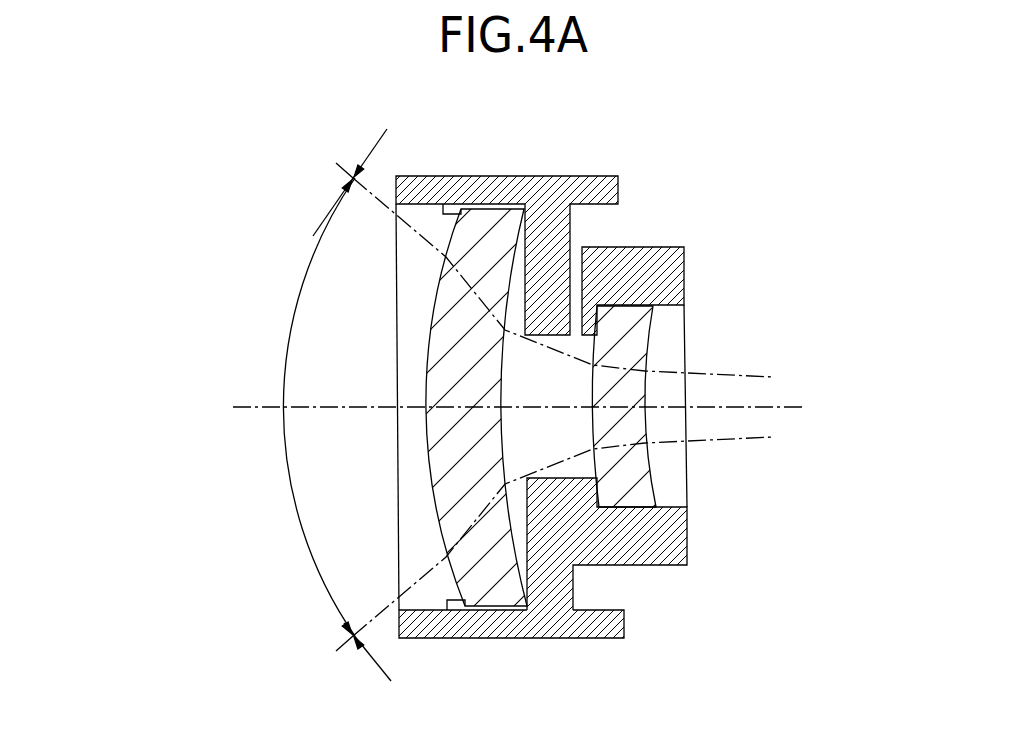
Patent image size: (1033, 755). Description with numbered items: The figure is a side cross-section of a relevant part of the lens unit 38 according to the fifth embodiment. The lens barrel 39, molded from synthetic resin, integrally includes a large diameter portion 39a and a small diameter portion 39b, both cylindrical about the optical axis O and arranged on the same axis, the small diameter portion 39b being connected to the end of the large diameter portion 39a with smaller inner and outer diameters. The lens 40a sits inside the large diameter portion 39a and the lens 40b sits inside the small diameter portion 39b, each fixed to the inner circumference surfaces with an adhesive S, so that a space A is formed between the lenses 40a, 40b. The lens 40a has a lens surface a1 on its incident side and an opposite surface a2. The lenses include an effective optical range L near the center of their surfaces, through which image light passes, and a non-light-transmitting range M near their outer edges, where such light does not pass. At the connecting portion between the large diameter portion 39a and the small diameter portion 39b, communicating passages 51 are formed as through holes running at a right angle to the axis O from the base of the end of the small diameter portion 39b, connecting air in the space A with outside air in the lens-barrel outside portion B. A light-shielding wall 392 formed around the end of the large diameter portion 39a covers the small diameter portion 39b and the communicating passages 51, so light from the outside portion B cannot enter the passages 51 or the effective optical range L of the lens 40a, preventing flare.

The lens unit 38 is at (745, 175).
The light-shielding wall 392 is at (620, 188).
The lens barrel 39 is at (587, 460).
The large diameter portion 39a is at (470, 638).
The small diameter portion 39b is at (630, 566).
The communicating passage 51 is at (577, 272).
The lens 40a is at (427, 384).
The lens 40b is at (620, 400).
The lens surface a1 is at (436, 514).
The exit surface of first lens a2 is at (503, 436).
The space A is at (551, 391).
The lens-barrel outside portion B is at (712, 295).
The adhesive S is at (443, 202).
The optical axis O is at (264, 407).
The effective optical range L is at (308, 266).
The non-light-transmitting range M is at (287, 703).